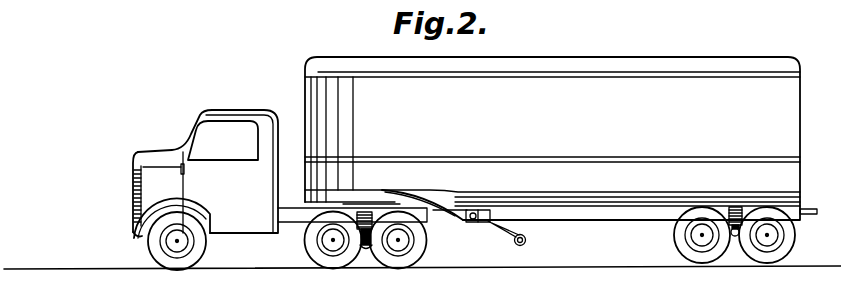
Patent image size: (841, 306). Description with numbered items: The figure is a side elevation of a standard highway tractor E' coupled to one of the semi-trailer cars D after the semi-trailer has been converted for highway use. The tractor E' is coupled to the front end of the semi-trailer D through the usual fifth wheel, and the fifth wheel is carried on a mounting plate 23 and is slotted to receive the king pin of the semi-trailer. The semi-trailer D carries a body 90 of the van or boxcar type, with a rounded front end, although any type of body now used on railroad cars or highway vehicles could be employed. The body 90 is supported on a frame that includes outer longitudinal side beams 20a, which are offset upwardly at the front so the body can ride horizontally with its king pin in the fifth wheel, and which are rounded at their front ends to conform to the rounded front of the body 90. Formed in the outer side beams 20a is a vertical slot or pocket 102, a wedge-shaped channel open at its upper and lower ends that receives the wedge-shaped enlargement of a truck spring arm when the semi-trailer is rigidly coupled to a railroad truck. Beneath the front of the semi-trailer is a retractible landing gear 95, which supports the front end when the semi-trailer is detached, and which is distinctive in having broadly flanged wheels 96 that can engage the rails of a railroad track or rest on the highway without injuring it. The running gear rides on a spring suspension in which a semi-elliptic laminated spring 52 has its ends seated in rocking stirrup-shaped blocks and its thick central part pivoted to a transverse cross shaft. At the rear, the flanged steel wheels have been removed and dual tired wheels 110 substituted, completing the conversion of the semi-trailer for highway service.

The highway tractor E' is at (280, 170).
The semi-trailer car D is at (628, 58).
The body 90 is at (552, 117).
The mounting plate 23 is at (402, 186).
The semi-elliptic laminated spring 52 is at (366, 236).
The retractible landing gear 95 is at (495, 237).
The broadly flanged wheels 96 is at (527, 243).
The vertical slot or pocket 102 is at (491, 217).
The outer longitudinal side beams 20a is at (592, 214).
The dual tired wheels 110 is at (671, 250).